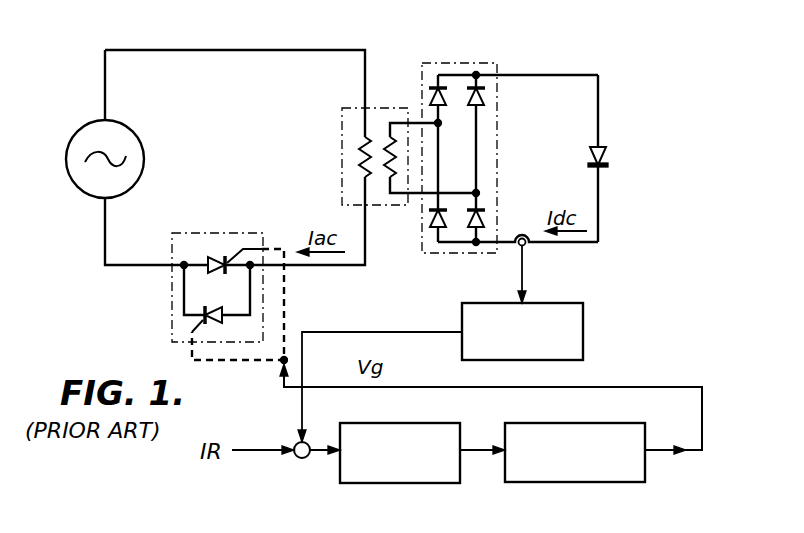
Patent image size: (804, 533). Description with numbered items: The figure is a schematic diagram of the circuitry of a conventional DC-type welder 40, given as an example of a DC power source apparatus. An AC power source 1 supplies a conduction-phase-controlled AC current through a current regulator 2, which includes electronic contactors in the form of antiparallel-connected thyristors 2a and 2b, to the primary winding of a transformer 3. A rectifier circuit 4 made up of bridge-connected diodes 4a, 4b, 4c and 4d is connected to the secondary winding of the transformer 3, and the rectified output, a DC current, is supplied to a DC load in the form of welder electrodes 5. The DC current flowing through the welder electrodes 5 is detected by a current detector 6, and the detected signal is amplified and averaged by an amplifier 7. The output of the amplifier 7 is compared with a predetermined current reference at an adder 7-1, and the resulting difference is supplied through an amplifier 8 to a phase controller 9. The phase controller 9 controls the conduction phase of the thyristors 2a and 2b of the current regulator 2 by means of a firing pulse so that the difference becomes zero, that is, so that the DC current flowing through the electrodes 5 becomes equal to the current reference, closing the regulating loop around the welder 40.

The DC-type welder 40 is at (228, 40).
The AC power source 1 is at (142, 142).
The current regulator 2 is at (227, 285).
The thyristor 2a is at (210, 270).
The thyristor 2b is at (224, 312).
The transformer 3 is at (358, 106).
The rectifier circuit 4 is at (489, 159).
The diode 4a is at (443, 100).
The diode 4b is at (484, 99).
The diode 4c is at (468, 226).
The diode 4d is at (430, 226).
The welder electrodes 5 is at (609, 157).
The current detector 6 is at (522, 235).
The amplifier 7 is at (588, 326).
The adder 7-1 is at (296, 441).
The amplifier 8 is at (412, 484).
The phase controller 9 is at (592, 483).